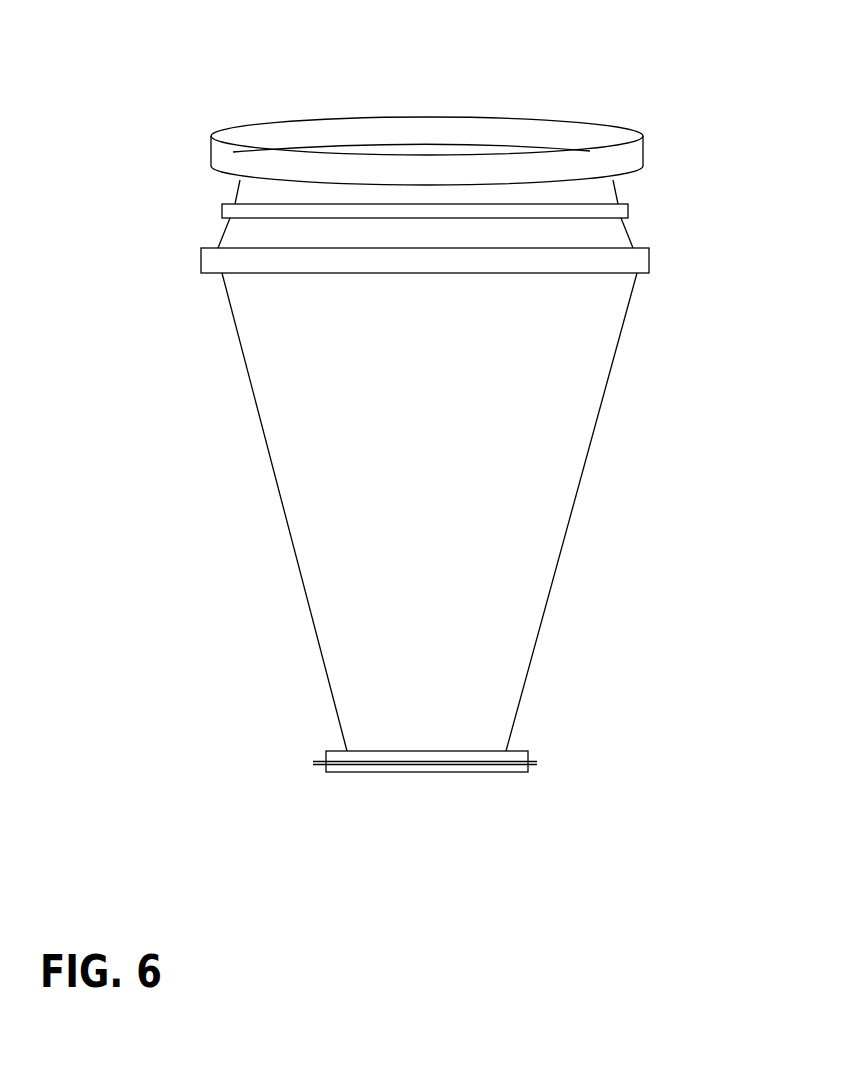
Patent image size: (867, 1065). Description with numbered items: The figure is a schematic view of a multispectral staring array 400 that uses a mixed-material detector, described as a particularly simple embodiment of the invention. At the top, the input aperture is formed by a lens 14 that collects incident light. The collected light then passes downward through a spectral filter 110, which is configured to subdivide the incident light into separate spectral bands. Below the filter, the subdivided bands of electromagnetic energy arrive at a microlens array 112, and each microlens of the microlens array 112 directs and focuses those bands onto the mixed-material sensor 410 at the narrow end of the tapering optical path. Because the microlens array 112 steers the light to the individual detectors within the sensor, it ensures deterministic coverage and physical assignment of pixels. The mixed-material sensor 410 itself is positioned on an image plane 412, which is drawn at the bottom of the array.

The multispectral staring array 400 is at (712, 42).
The lens 14 is at (538, 130).
The spectral filter 110 is at (623, 210).
The microlens array 112 is at (637, 260).
The mixed-material sensor 410 is at (415, 767).
The image plane 412 is at (532, 767).